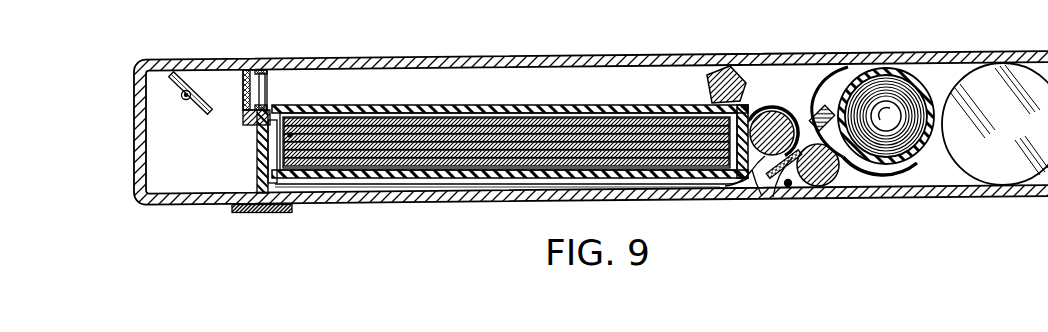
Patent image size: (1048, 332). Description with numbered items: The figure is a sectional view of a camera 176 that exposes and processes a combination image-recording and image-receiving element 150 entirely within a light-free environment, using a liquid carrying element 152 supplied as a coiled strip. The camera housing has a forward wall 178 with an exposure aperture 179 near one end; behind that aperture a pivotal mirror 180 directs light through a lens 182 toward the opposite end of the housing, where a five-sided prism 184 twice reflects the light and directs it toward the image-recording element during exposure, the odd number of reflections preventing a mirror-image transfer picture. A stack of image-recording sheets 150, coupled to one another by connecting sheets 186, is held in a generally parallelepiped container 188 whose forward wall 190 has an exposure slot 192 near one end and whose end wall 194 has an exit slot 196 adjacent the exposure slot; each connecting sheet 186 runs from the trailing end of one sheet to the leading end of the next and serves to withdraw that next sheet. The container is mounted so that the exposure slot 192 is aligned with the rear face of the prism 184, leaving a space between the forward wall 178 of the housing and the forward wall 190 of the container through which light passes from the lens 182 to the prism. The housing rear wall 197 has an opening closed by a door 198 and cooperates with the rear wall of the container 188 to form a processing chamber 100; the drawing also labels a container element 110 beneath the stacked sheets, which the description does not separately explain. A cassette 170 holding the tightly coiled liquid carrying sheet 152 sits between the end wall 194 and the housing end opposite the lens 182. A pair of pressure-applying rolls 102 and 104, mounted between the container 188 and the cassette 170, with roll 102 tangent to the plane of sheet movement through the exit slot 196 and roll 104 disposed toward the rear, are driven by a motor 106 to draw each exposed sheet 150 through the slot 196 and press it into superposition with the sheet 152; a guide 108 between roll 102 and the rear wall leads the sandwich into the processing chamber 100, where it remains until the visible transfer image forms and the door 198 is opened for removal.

The processing chamber 100 is at (442, 185).
The pressure-applying roll 102 is at (761, 176).
The pressure-applying roll 104 is at (827, 195).
The motor 106 is at (1000, 186).
The guide 108 is at (790, 187).
The cassette bottom wall 110 is at (537, 178).
The image-recording and image-receiving element 150 is at (596, 120).
The liquid carrying element 152 is at (905, 160).
The cassette 170 is at (905, 74).
The camera 176 is at (133, 192).
The forward wall 178 is at (457, 62).
The exposure aperture 179 is at (208, 62).
The pivotal mirror 180 is at (175, 88).
The lens 182 is at (243, 100).
The 5-sided prism 184 is at (742, 57).
The connecting sheet 186 is at (292, 135).
The container 188 is at (640, 104).
The forward wall 190 is at (484, 106).
The exposure slot 192 is at (700, 103).
The wall 194 is at (733, 185).
The exit slot 196 is at (754, 115).
The rear wall 197 is at (168, 196).
The door 198 is at (351, 196).